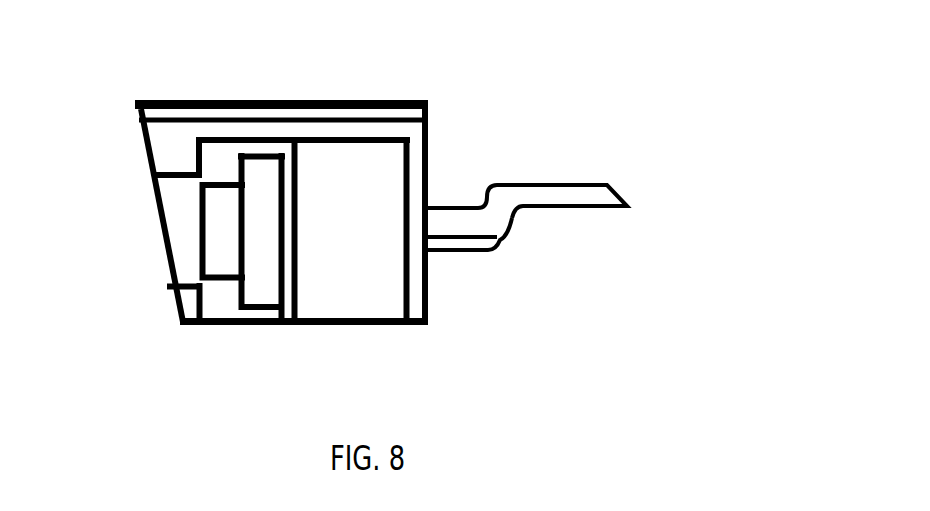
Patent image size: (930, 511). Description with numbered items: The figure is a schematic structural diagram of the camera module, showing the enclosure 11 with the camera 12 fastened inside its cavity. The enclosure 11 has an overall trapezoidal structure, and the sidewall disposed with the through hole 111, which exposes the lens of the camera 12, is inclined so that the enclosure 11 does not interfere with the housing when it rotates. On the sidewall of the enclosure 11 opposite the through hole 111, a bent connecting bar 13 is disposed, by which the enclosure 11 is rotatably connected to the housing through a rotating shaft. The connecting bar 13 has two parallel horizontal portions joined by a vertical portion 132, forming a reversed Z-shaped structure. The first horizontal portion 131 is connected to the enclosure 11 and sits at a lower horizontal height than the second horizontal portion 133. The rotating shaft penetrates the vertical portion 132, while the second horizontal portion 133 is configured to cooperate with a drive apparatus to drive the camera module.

The enclosure 11 is at (210, 100).
The through hole 111 is at (160, 228).
The camera 12 is at (312, 297).
The connecting bar 13 is at (558, 224).
The first horizontal portion 131 is at (443, 205).
The vertical portion 132 is at (483, 187).
The second horizontal portion 133 is at (588, 183).